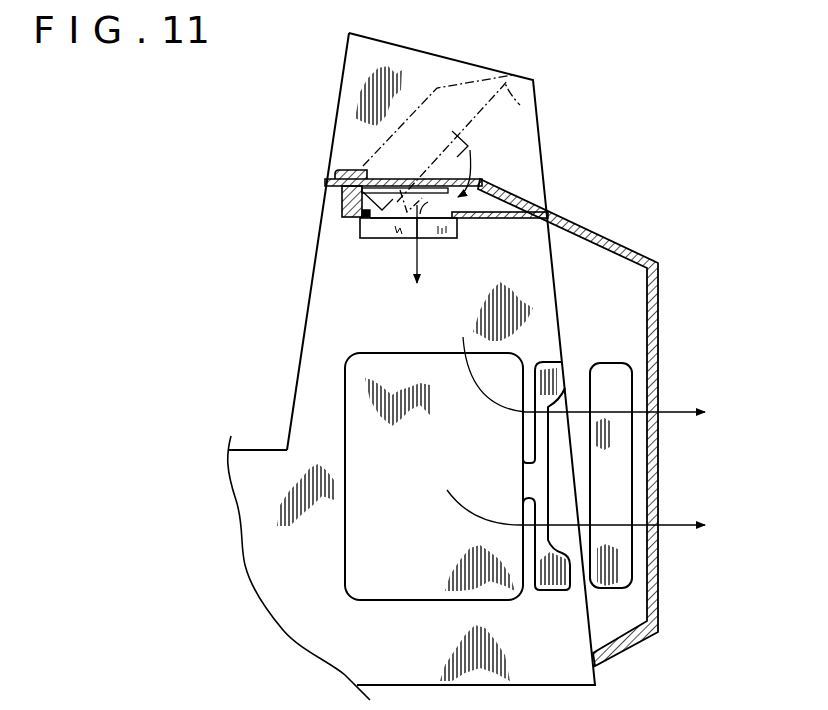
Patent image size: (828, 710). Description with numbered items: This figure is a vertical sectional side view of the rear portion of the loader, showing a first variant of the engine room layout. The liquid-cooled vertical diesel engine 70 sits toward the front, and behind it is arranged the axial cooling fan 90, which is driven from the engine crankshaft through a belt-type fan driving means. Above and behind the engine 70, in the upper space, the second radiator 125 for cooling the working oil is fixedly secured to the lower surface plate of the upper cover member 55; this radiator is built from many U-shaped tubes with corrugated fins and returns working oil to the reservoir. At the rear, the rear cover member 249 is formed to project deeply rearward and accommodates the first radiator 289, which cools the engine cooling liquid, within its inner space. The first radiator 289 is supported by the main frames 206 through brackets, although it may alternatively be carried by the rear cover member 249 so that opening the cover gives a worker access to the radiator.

The upper cover member 55 is at (493, 177).
The second radiator 125 is at (392, 220).
The main frames 206 is at (257, 453).
The rear cover member 249 is at (658, 298).
The engine 70 is at (363, 560).
The cooling fan 90 is at (552, 592).
The first radiator 289 is at (623, 570).